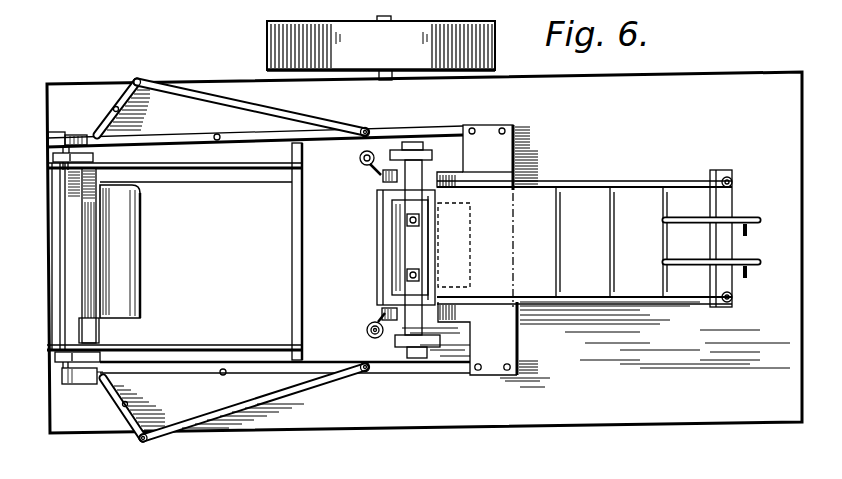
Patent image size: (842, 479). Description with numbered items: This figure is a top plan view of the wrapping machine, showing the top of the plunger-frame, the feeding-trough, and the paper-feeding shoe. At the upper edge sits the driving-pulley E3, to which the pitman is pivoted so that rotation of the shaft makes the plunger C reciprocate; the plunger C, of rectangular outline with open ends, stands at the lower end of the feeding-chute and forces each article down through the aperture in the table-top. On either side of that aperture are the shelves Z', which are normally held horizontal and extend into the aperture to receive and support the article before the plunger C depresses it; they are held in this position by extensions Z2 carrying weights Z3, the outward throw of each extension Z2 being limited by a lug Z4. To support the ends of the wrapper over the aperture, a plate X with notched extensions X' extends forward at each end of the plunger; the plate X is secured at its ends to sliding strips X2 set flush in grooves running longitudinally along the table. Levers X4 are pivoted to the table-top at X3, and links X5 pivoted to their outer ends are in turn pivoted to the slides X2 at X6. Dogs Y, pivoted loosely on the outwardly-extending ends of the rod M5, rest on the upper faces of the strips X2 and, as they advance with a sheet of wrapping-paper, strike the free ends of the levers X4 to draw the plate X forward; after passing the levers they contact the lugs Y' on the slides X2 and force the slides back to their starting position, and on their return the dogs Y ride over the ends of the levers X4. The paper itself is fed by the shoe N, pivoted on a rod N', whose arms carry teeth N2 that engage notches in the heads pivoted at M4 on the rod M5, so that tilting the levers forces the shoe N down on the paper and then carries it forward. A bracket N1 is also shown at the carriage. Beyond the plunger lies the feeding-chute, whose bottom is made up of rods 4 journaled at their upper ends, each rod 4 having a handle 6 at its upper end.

The driving-pulley E3 is at (495, 61).
The plate X is at (424, 252).
The notched extensions X' is at (584, 238).
The sliding strips X2 is at (452, 369).
The lever pivots X3 is at (114, 106).
The levers X4 is at (130, 456).
The links X5 is at (210, 96).
The link pivots X6 is at (368, 129).
The dogs Y is at (58, 245).
The lugs Y' is at (244, 274).
The shoe N is at (128, 251).
The rod N' is at (52, 255).
The bracket N1 is at (94, 157).
The teeth N2 is at (110, 345).
The head pivots M4 is at (62, 372).
The rod M5 is at (67, 318).
The plunger C is at (400, 228).
The shelves Z' is at (426, 250).
The extensions Z2 is at (359, 158).
The weights Z3 is at (365, 168).
The lug Z4 is at (371, 268).
The rods 4 is at (692, 226).
The handle 6 is at (748, 236).